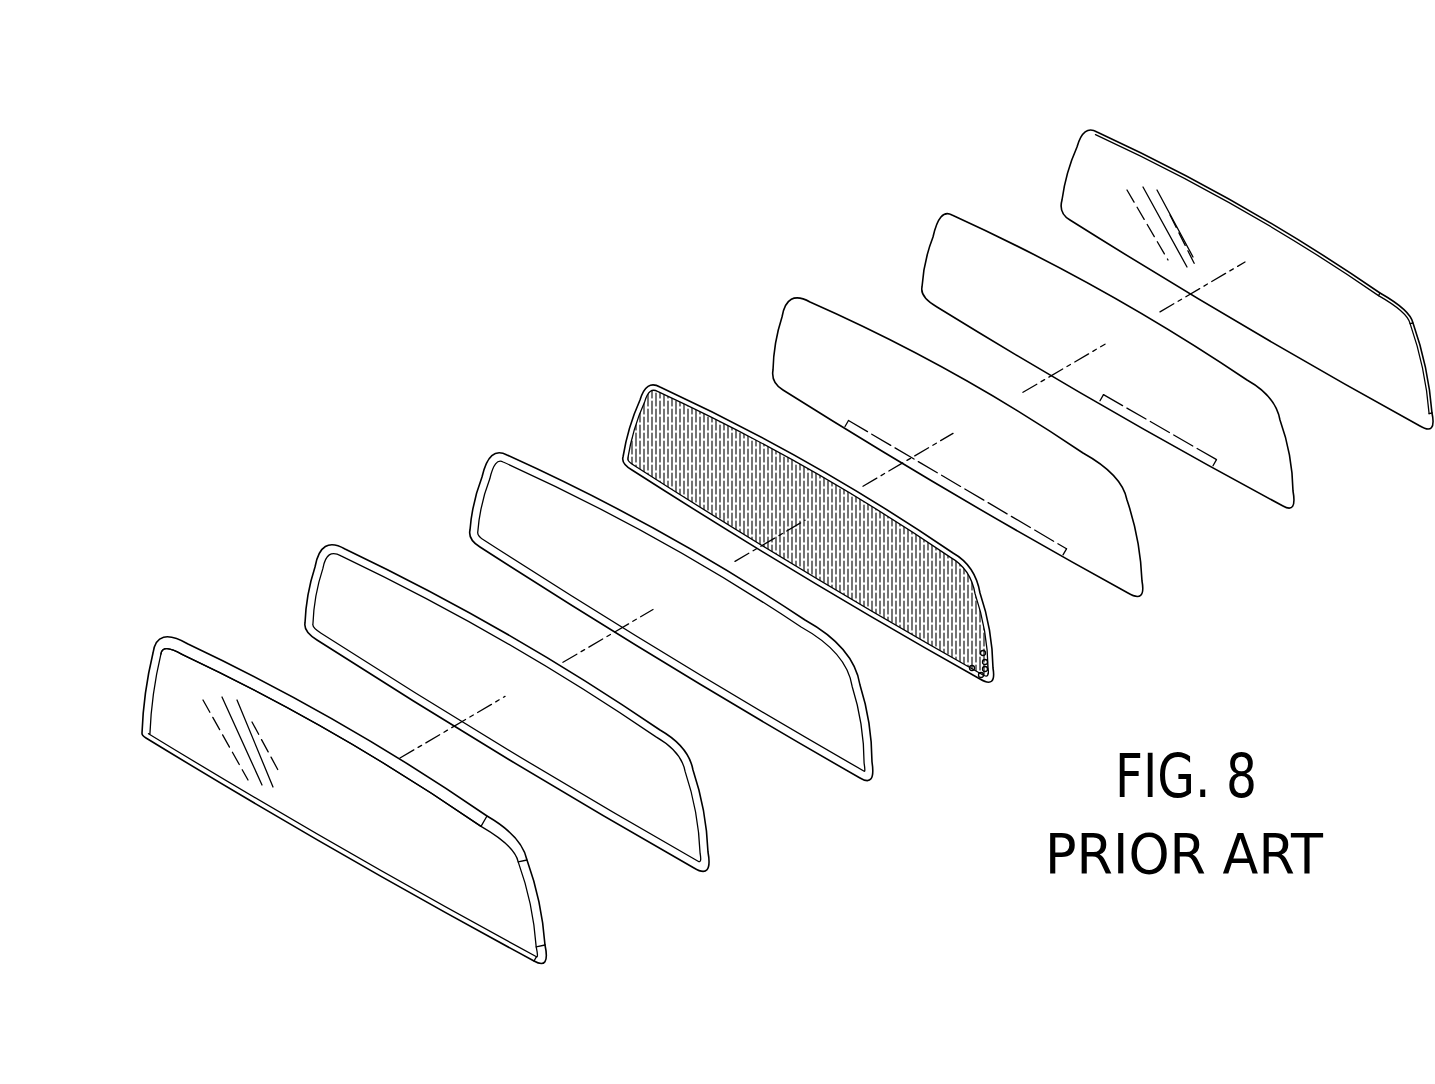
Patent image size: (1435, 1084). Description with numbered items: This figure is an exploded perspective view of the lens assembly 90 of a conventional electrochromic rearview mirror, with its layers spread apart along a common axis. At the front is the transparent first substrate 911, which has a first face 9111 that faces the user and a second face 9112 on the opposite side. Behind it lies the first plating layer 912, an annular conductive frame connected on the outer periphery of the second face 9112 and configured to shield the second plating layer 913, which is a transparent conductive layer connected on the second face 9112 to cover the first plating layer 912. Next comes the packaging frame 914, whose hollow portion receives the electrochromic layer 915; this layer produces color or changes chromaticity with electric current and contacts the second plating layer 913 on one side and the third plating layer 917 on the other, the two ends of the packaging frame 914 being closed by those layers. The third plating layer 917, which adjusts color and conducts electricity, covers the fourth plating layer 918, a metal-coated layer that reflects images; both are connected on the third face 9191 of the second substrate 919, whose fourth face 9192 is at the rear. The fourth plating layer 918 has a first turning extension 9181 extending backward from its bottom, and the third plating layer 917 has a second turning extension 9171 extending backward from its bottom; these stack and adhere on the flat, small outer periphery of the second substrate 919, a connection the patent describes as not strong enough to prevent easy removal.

The lens assembly 90 is at (410, 295).
The first substrate 911 is at (172, 640).
The first face 9111 is at (186, 680).
The second face 9112 is at (250, 658).
The first plating layer 912 is at (332, 548).
The second plating layer 913 is at (492, 457).
The packaging frame 914 is at (638, 394).
The electrochromic layer 915 is at (686, 435).
The third plating layer 917 is at (798, 298).
The second turning extension 9171 is at (1025, 527).
The fourth plating layer 918 is at (947, 213).
The first turning extension 9181 is at (1175, 447).
The second substrate 919 is at (1072, 153).
The third face 9191 is at (1293, 270).
The fourth face 9192 is at (1340, 262).